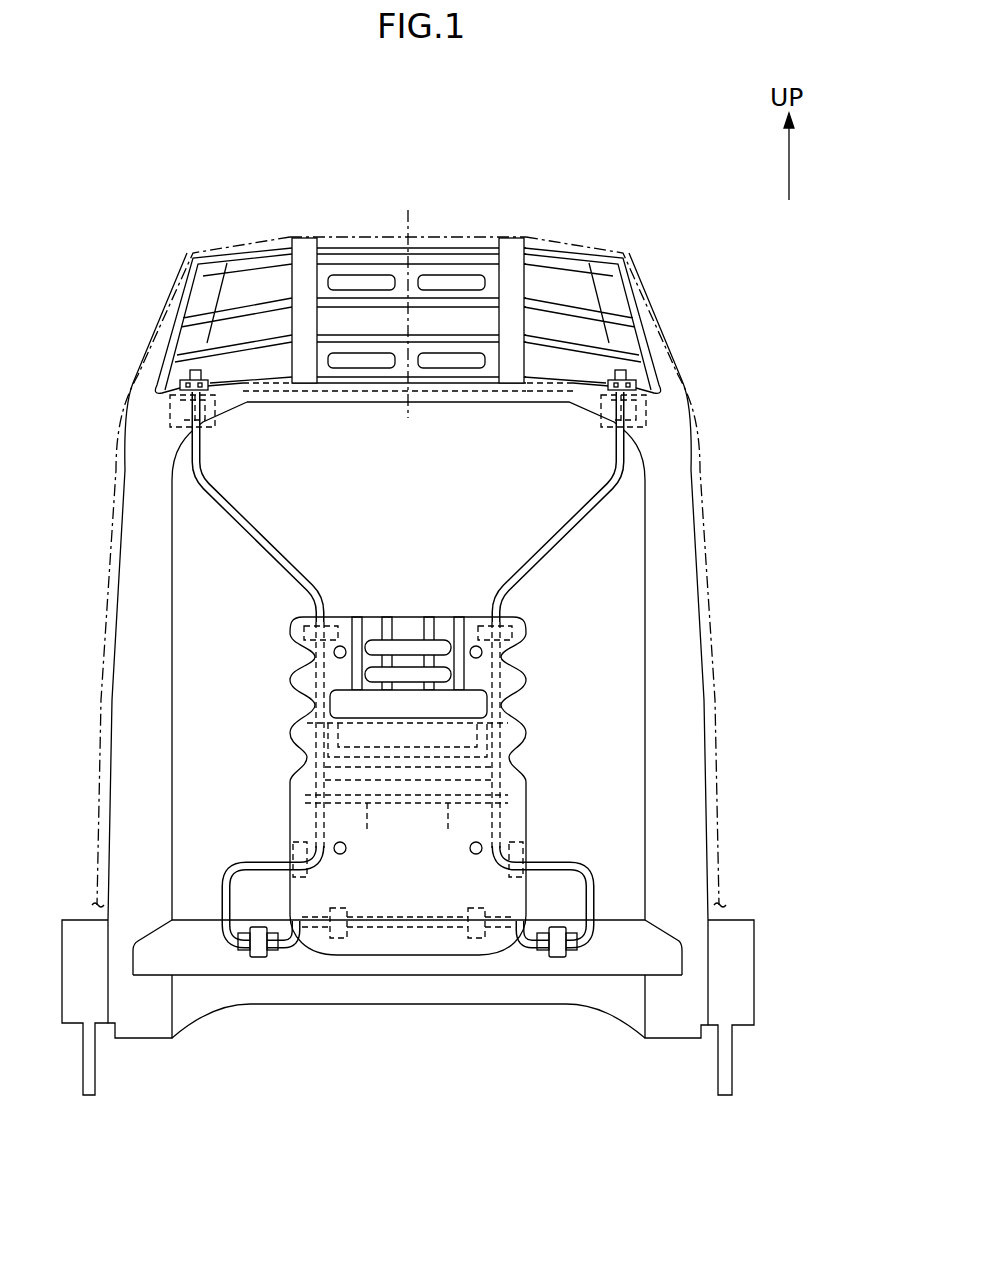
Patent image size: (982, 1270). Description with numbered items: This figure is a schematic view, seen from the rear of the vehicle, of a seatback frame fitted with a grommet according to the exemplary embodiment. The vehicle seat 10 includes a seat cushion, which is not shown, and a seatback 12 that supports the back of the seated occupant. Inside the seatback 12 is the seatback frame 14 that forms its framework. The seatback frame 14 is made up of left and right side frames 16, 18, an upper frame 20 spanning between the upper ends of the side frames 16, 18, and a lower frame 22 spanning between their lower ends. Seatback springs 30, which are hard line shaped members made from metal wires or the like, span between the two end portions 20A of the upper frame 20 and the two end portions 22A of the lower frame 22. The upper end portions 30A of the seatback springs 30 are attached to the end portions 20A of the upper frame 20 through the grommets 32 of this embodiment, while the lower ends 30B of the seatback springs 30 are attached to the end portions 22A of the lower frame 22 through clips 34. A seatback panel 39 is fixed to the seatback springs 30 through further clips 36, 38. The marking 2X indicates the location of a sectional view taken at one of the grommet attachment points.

The vehicle seat 10 is at (722, 360).
The seatback 12 is at (712, 585).
The seatback frame 14 is at (693, 498).
The side frame 16 is at (643, 700).
The side frame 18 is at (176, 695).
The upper frame 20 is at (430, 405).
The end portion of upper frame 20A is at (223, 383).
The lower frame 22 is at (628, 922).
The end portion of lower frame 22A is at (193, 920).
The section line 2X is at (188, 357).
The seatback spring 30 is at (278, 542).
The upper end portion of seatback spring 30A is at (175, 377).
The lower end of seatback spring 30B is at (283, 950).
The grommet 32 is at (175, 377).
The clip 34 is at (258, 958).
The clip 36 is at (291, 632).
The clip 38 is at (472, 940).
The seatback panel 39 is at (427, 614).